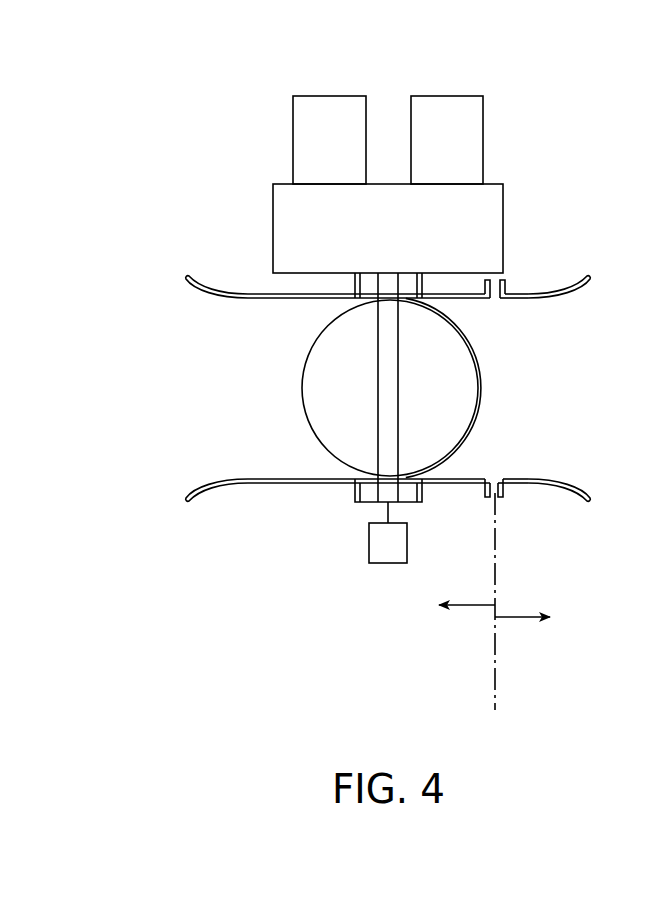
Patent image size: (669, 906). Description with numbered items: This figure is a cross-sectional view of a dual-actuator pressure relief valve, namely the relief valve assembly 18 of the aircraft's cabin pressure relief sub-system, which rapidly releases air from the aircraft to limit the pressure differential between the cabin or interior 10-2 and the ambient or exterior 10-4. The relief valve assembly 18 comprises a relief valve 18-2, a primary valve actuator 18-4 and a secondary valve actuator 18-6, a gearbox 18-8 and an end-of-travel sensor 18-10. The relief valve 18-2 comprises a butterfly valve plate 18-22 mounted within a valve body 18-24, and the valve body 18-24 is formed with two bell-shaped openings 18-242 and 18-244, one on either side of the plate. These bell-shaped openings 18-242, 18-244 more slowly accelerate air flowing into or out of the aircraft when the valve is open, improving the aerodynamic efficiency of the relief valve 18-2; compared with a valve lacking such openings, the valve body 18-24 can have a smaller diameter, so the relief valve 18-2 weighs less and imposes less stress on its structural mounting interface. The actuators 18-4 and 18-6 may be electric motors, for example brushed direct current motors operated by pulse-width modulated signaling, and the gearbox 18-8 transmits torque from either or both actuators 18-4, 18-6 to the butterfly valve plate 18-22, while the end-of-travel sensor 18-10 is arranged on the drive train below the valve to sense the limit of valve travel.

The relief valve assembly 18 is at (356, 308).
The relief valve 18-2 is at (272, 483).
The bell-shaped opening 18-242 is at (211, 456).
The bell-shaped opening 18-244 is at (592, 463).
The valve actuator 18-4 is at (329, 95).
The valve actuator 18-6 is at (448, 95).
The gearbox 18-8 is at (505, 225).
The end-of-travel sensor 18-10 is at (369, 550).
The butterfly valve plate 18-22 is at (482, 373).
The valve body 18-24 is at (233, 290).
The cabin or interior 10-2 is at (468, 605).
The ambient or exterior 10-4 is at (520, 617).